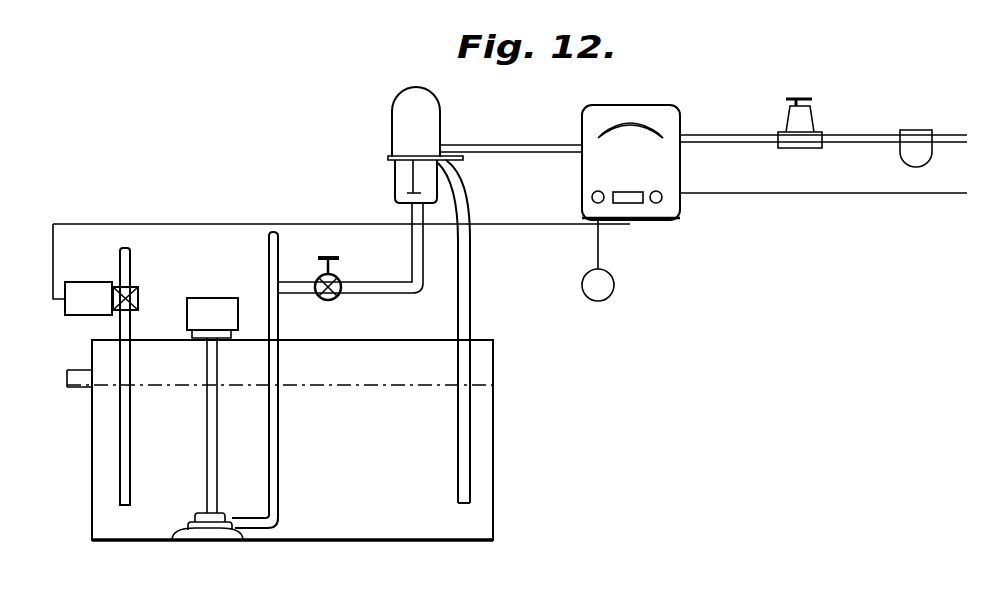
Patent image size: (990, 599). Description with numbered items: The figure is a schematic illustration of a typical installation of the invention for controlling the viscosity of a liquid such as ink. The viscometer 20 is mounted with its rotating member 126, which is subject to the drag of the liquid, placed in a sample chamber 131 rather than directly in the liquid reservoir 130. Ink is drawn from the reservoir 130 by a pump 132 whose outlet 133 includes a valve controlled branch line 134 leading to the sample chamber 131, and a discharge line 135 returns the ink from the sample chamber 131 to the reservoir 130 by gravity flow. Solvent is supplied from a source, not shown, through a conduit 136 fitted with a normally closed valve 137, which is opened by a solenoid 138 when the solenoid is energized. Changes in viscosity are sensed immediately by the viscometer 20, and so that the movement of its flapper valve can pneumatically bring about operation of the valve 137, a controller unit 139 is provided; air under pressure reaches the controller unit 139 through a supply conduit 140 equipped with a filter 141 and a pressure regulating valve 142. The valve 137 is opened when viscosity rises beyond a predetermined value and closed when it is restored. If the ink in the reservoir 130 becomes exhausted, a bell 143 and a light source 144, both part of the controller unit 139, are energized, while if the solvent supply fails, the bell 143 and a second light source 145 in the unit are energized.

The viscometer 20 is at (389, 121).
The member 126 is at (410, 190).
The liquid reservoir 130 is at (493, 463).
The sample chamber 131 is at (393, 170).
The pump 132 is at (184, 315).
The outlet 133 is at (268, 248).
The branch line 134 is at (385, 281).
The discharge line 135 is at (470, 300).
The conduit 136 is at (130, 270).
The valve 137 is at (139, 293).
The solenoid 138 is at (75, 310).
The controller unit 139 is at (666, 92).
The supply conduit 140 is at (950, 133).
The filter 141 is at (906, 153).
The pressure regulating valve 142 is at (808, 125).
The bell 143 is at (596, 301).
The light source 144 is at (592, 197).
The light source 145 is at (657, 204).